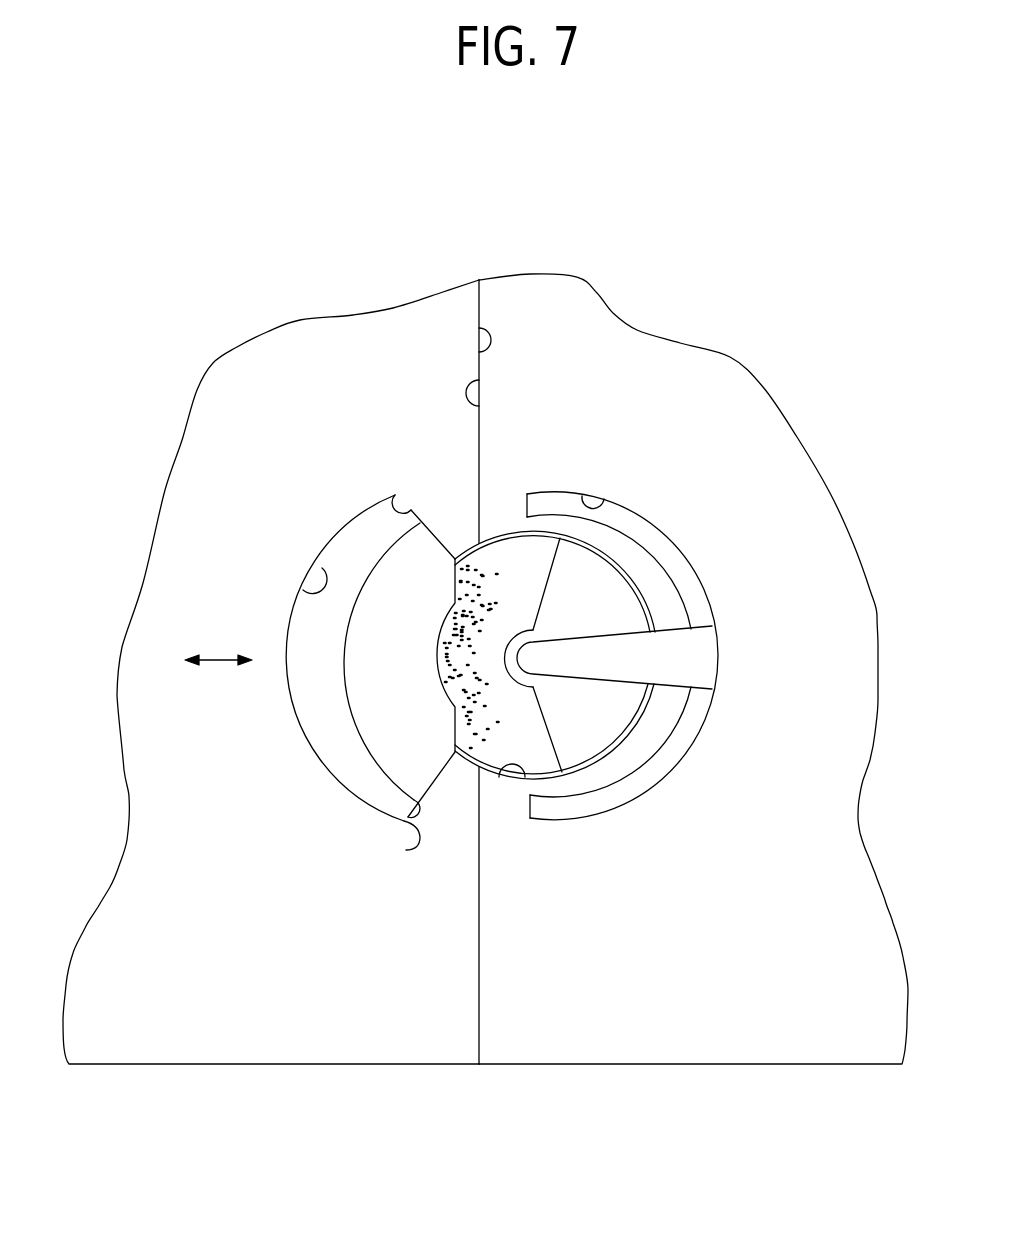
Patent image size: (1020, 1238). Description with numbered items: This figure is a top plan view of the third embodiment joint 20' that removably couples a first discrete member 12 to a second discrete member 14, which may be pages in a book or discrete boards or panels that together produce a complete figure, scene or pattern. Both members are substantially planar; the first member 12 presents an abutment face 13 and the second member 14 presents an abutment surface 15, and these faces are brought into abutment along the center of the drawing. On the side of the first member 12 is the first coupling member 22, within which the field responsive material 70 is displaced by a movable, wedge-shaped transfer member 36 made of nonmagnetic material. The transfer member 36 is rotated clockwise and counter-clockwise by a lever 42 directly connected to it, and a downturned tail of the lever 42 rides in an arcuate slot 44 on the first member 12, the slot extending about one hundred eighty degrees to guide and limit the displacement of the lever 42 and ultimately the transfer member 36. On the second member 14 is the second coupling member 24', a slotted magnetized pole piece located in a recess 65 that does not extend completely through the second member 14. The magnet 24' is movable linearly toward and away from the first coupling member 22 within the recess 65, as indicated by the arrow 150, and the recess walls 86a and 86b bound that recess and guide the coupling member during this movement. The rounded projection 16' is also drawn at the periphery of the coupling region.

The first discrete member 12 is at (738, 427).
The abutment face 13 is at (481, 412).
The second discrete member 14 is at (300, 362).
The abutment surface 15 is at (477, 325).
The pivot projection 16' is at (530, 833).
The third embodiment joint 20' is at (395, 744).
The first coupling member 22 is at (612, 832).
The second coupling member 24' is at (305, 658).
The transfer member 36 is at (563, 595).
The lever 42 is at (702, 645).
The arcuate slot 44 is at (603, 501).
The recess 65 is at (322, 568).
The field responsive material 70 is at (500, 703).
The recess wall 86a is at (395, 495).
The recess wall 86b is at (406, 850).
The arrow 150 is at (217, 652).